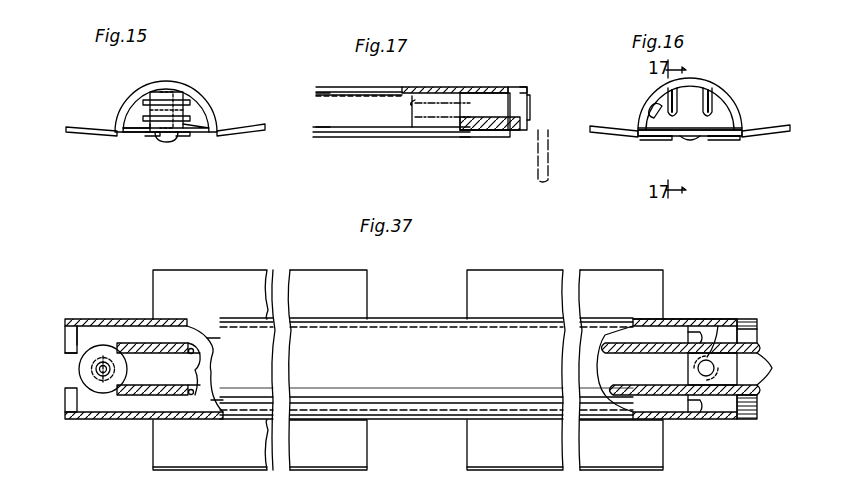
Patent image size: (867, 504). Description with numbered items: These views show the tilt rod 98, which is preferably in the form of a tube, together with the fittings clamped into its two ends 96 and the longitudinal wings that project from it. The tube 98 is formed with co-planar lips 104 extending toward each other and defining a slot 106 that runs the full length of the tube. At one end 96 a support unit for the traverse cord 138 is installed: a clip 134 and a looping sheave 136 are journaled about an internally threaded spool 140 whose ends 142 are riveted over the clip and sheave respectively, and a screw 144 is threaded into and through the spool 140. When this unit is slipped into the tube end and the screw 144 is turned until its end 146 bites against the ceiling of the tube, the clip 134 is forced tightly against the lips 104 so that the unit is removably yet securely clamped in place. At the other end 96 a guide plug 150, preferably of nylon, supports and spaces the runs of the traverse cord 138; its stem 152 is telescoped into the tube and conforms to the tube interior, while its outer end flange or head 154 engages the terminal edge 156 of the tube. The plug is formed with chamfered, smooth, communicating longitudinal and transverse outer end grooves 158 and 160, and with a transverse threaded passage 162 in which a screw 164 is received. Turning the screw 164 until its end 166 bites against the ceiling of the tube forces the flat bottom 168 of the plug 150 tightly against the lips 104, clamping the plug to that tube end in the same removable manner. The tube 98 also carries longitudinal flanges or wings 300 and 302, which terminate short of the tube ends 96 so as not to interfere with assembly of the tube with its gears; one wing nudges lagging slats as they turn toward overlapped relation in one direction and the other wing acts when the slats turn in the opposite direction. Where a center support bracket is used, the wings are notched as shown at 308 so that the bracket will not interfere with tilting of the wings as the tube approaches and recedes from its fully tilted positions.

In FIG. 15, the tube ends 96 is at (205, 102).
In FIG. 17, the tube ends 96 is at (498, 90).
In FIG. 16, the tube ends 96 is at (655, 95).
In FIG. 15, the tilt rod 98 is at (162, 84).
In FIG. 17, the tilt rod 98 is at (457, 84).
In FIG. 16, the tilt rod 98 is at (738, 140).
In FIG. 37, the tilt rod 98 is at (135, 421).
In FIG. 15, the co-planar lips 104 is at (128, 136).
In FIG. 17, the co-planar lips 104 is at (365, 110).
In FIG. 16, the co-planar lips 104 is at (650, 140).
In FIG. 37, the co-planar lips 104 is at (155, 369).
In FIG. 15, the slot 106 is at (185, 137).
In FIG. 17, the slot 106 is at (438, 132).
In FIG. 16, the slot 106 is at (663, 140).
In FIG. 37, the slot 106 is at (210, 370).
In FIG. 15, the clip 134 is at (150, 137).
In FIG. 37, the clip 134 is at (83, 333).
In FIG. 15, the looping sheave 136 is at (190, 106).
In FIG. 37, the looping sheave 136 is at (88, 372).
In FIG. 17, the traverse cord 138 is at (520, 157).
In FIG. 37, the traverse cord 138 is at (212, 346).
In FIG. 15, the internally threaded spool 140 is at (116, 98).
In FIG. 37, the internally threaded spool 140 is at (95, 360).
In FIG. 15, the spool ends 142 is at (144, 82).
In FIG. 37, the spool ends 142 is at (91, 369).
In FIG. 15, the screw 144 is at (172, 142).
In FIG. 37, the screw 144 is at (103, 369).
In FIG. 15, the screw end 146 is at (170, 101).
In FIG. 37, the screw end 146 is at (105, 378).
In FIG. 17, the guide plug 150 is at (532, 98).
In FIG. 16, the guide plug 150 is at (725, 95).
In FIG. 37, the guide plug 150 is at (762, 330).
In FIG. 17, the stem 152 is at (508, 96).
In FIG. 37, the stem 152 is at (710, 405).
In FIG. 17, the outer end flange 154 is at (525, 88).
In FIG. 16, the outer end flange 154 is at (730, 108).
In FIG. 37, the outer end flange 154 is at (737, 320).
In FIG. 16, the terminal edge 156 is at (645, 112).
In FIG. 37, the terminal edge 156 is at (757, 320).
In FIG. 37, the longitudinal outer end groove 158 is at (690, 334).
In FIG. 37, the transverse outer end groove 160 is at (770, 368).
In FIG. 37, the transverse threaded passage 162 is at (703, 366).
In FIG. 17, the screw 164 is at (478, 132).
In FIG. 16, the screw 164 is at (690, 140).
In FIG. 37, the screw 164 is at (700, 358).
In FIG. 37, the screw end 166 is at (716, 326).
In FIG. 16, the flat bottom 168 is at (705, 140).
In FIG. 15, the wing 300 is at (246, 128).
In FIG. 16, the wing 300 is at (600, 128).
In FIG. 37, the wing 300 is at (443, 487).
In FIG. 15, the wing 302 is at (96, 127).
In FIG. 16, the wing 302 is at (780, 122).
In FIG. 37, the wing 302 is at (444, 258).
In FIG. 37, the notch 308 is at (470, 301).